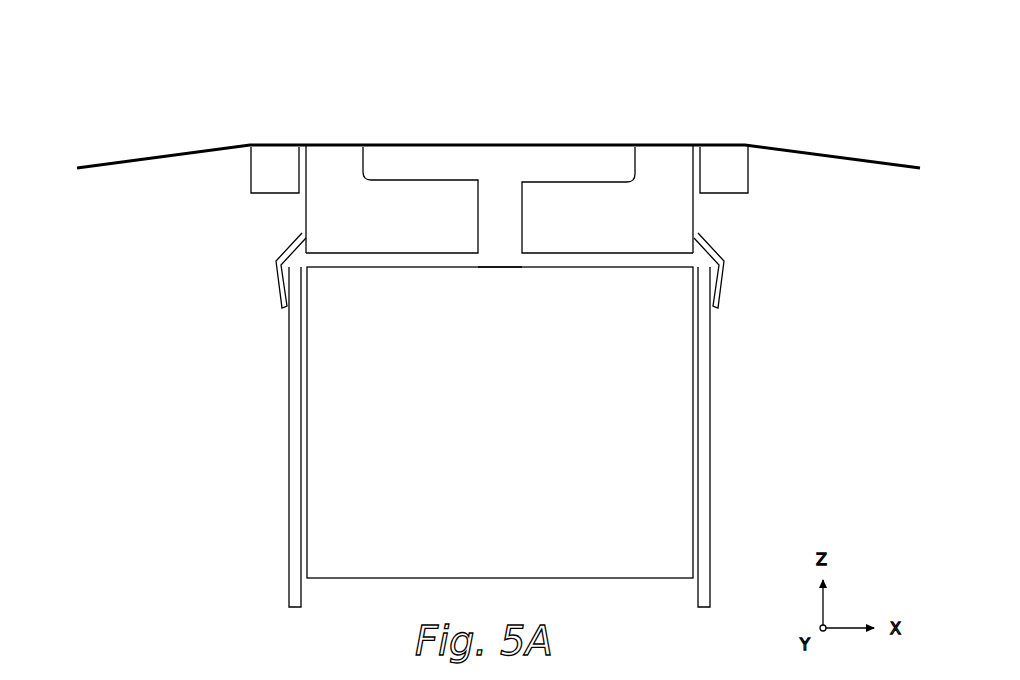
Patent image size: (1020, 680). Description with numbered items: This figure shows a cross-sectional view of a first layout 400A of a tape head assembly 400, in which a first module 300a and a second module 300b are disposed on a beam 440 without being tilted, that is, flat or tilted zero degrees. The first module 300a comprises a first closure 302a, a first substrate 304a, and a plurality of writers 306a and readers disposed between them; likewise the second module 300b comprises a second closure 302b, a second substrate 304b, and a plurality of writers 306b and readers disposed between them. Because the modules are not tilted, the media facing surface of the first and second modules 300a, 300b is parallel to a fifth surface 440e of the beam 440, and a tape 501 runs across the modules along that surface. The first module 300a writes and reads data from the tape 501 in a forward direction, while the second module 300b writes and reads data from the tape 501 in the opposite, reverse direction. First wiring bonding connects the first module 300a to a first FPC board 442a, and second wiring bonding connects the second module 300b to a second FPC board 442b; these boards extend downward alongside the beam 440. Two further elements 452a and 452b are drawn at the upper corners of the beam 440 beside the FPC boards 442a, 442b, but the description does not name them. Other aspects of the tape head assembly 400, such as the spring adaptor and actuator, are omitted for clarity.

The first layout 400A is at (183, 38).
The tape head assembly 400 is at (360, 70).
The first module 300a is at (270, 98).
The second module 300b is at (743, 100).
The tape 501 is at (152, 153).
The first closure 302a is at (268, 182).
The second closure 302b is at (733, 176).
The first substrate 304a is at (392, 200).
The second substrate 304b is at (607, 200).
The writers 306a is at (306, 138).
The writers 306b is at (690, 138).
The beam 440 is at (500, 422).
The fifth surface 440e is at (499, 268).
The first FPC board 442a is at (289, 515).
The second FPC board 442b is at (710, 515).
The first retaining clip 452a is at (275, 262).
The second retaining clip 452b is at (728, 266).